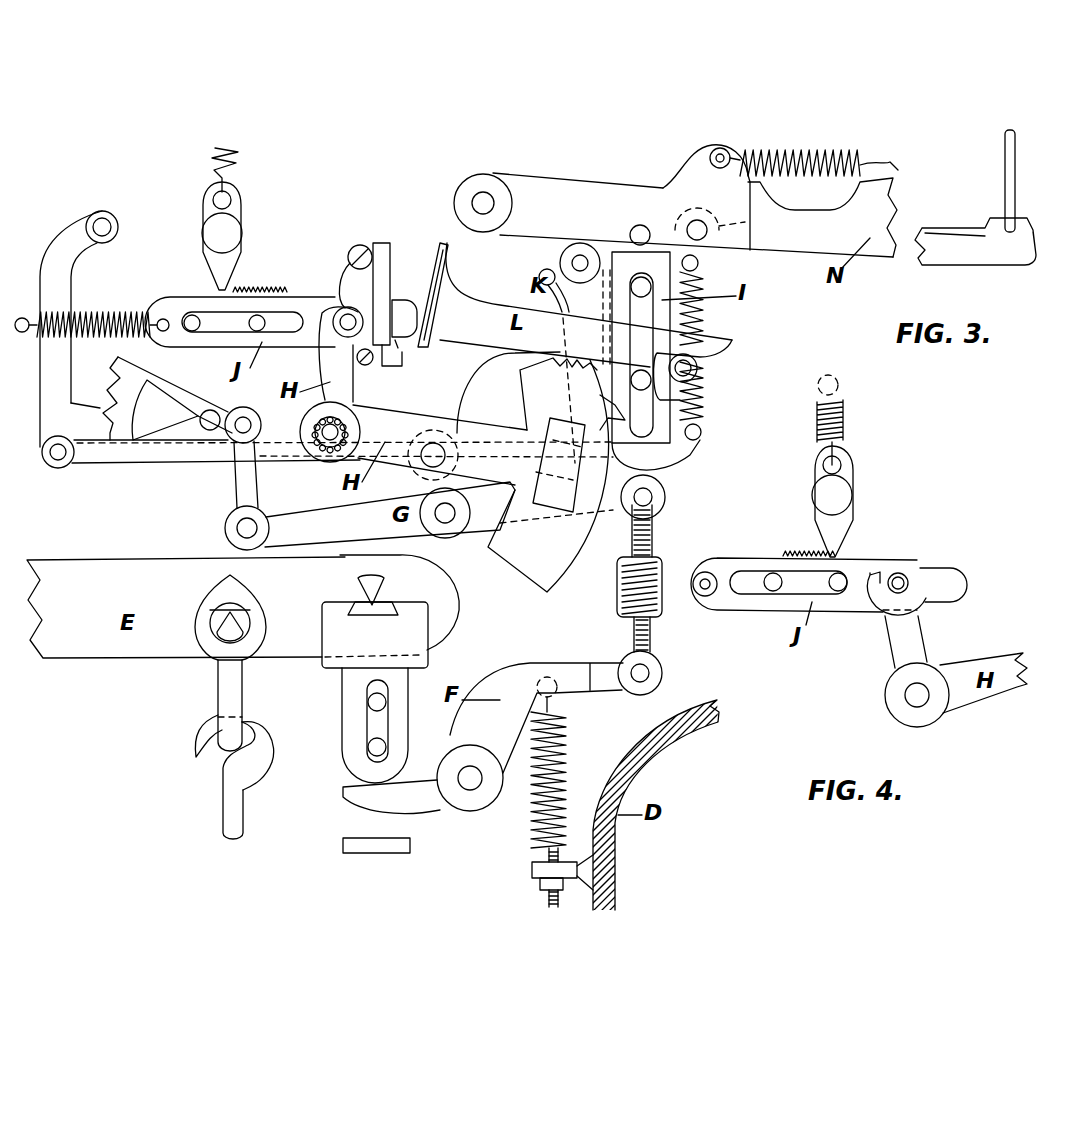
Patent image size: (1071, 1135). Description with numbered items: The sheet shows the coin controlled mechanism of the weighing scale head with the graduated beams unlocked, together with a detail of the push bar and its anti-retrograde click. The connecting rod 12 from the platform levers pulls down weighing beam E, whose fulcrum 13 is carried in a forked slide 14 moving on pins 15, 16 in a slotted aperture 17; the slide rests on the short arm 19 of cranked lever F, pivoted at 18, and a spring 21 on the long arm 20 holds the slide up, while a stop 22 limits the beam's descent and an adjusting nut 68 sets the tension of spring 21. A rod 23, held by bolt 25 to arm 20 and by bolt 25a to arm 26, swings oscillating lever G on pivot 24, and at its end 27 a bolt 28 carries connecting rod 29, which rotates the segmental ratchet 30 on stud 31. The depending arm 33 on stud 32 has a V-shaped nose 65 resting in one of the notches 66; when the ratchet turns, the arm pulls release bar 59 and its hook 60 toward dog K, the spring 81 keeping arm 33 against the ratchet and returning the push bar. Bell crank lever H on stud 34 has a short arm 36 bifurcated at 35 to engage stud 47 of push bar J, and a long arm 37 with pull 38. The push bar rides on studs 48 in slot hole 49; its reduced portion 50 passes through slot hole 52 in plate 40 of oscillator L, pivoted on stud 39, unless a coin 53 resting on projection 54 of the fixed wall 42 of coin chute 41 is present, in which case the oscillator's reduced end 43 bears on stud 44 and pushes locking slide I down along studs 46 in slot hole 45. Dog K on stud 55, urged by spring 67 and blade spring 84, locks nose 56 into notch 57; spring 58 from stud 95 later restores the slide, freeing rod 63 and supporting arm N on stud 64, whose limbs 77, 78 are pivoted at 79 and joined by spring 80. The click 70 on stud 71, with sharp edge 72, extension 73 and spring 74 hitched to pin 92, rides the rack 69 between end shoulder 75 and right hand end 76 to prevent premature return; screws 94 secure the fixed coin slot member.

In FIG. 3, the connecting rod 12 is at (228, 807).
In FIG. 3, the fulcrum 13 is at (390, 592).
In FIG. 3, the forked slide 14 is at (430, 632).
In FIG. 3, the pin 15 is at (372, 702).
In FIG. 3, the pin 16 is at (372, 747).
In FIG. 3, the slotted aperture 17 is at (370, 722).
In FIG. 3, the pivot 18 is at (474, 782).
In FIG. 3, the short arm 19 is at (420, 803).
In FIG. 3, the long arm 20 is at (584, 690).
In FIG. 3, the spring 21 is at (568, 771).
In FIG. 3, the stop 22 is at (375, 857).
In FIG. 3, the rod 23 is at (656, 633).
In FIG. 3, the pivot 24 is at (446, 518).
In FIG. 3, the bolt 25 is at (650, 673).
In FIG. 3, the bolt 25a is at (652, 503).
In FIG. 3, the arm 26 is at (606, 505).
In FIG. 3, the end of lever G 27 is at (340, 542).
In FIG. 3, the bolt 28 is at (240, 529).
In FIG. 3, the connecting rod 29 is at (235, 478).
In FIG. 3, the segmental ratchet 30 is at (133, 452).
In FIG. 3, the stud 31 is at (207, 425).
In FIG. 3, the stud 32 is at (106, 224).
In FIG. 3, the depending ratchet-engaging arm 33 is at (55, 368).
In FIG. 3, the stud 34 is at (328, 436).
In FIG. 4, the stud 34 is at (914, 698).
In FIG. 3, the bifurcated end 35 is at (322, 318).
In FIG. 4, the bifurcated end 35 is at (908, 578).
In FIG. 3, the short arm 36 is at (334, 360).
In FIG. 4, the short arm 36 is at (920, 634).
In FIG. 3, the long arm 37 is at (440, 445).
In FIG. 4, the long arm 37 is at (990, 705).
In FIG. 3, the pull 38 is at (559, 465).
In FIG. 3, the stud 39 is at (430, 460).
In FIG. 3, the plate 40 is at (436, 250).
In FIG. 3, the coin chute 41 is at (382, 240).
In FIG. 3, the fixed wall 42 is at (360, 244).
In FIG. 3, the reduced end 43 is at (733, 357).
In FIG. 3, the stud 44 is at (695, 370).
In FIG. 3, the slot hole 45 is at (656, 323).
In FIG. 3, the studs 46 is at (650, 288).
In FIG. 3, the stud 47 is at (345, 310).
In FIG. 4, the stud 47 is at (900, 570).
In FIG. 3, the studs 48 is at (190, 333).
In FIG. 4, the studs 48 is at (770, 576).
In FIG. 3, the slot hole 49 is at (205, 318).
In FIG. 4, the slot hole 49 is at (758, 588).
In FIG. 3, the reduced portion 50 is at (400, 312).
In FIG. 4, the reduced portion 50 is at (955, 585).
In FIG. 3, the slot hole 52 is at (440, 313).
In FIG. 3, the coin 53 is at (428, 272).
In FIG. 3, the projection 54 is at (398, 355).
In FIG. 3, the stud 55 is at (572, 263).
In FIG. 3, the nose 56 is at (585, 393).
In FIG. 3, the notch 57 is at (700, 402).
In FIG. 3, the tensioned spring 58 is at (710, 345).
In FIG. 3, the release bar 59 is at (100, 452).
In FIG. 3, the hook 60 is at (650, 455).
In FIG. 3, the rod 63 is at (1003, 183).
In FIG. 3, the stud 64 is at (488, 200).
In FIG. 3, the V-shaped nose 65 is at (88, 425).
In FIG. 4, the V-shaped nose 65 is at (784, 550).
In FIG. 3, the notches 66 is at (105, 380).
In FIG. 3, the spring 67 is at (540, 276).
In FIG. 3, the adjusting nut 68 is at (533, 882).
In FIG. 3, the rack 69 is at (264, 287).
In FIG. 3, the click 70 is at (210, 250).
In FIG. 4, the click 70 is at (856, 505).
In FIG. 3, the stud 71 is at (215, 233).
In FIG. 4, the stud 71 is at (840, 496).
In FIG. 3, the sharp edge 72 is at (218, 290).
In FIG. 4, the sharp edge 72 is at (830, 550).
In FIG. 3, the extension 73 is at (240, 200).
In FIG. 4, the extension 73 is at (856, 462).
In FIG. 3, the tensioned spring 74 is at (238, 152).
In FIG. 4, the tensioned spring 74 is at (848, 434).
In FIG. 3, the end shoulder 75 is at (240, 288).
In FIG. 4, the end shoulder 75 is at (782, 552).
In FIG. 3, the right hand end 76 is at (286, 290).
In FIG. 4, the right hand end 76 is at (838, 554).
In FIG. 3, the limb 77 is at (693, 215).
In FIG. 3, the limb 78 is at (822, 217).
In FIG. 3, the pivot 79 is at (692, 222).
In FIG. 3, the spring 80 is at (805, 160).
In FIG. 3, the spring 81 is at (92, 308).
In FIG. 3, the blade spring 84 is at (556, 306).
In FIG. 4, the pin 92 is at (840, 387).
In FIG. 3, the screws 94 is at (350, 250).
In FIG. 3, the stud 95 is at (698, 262).